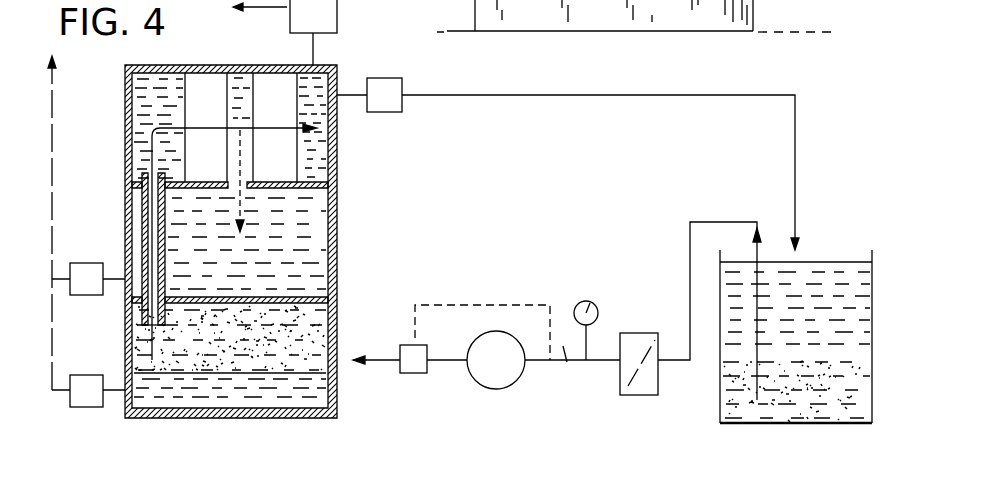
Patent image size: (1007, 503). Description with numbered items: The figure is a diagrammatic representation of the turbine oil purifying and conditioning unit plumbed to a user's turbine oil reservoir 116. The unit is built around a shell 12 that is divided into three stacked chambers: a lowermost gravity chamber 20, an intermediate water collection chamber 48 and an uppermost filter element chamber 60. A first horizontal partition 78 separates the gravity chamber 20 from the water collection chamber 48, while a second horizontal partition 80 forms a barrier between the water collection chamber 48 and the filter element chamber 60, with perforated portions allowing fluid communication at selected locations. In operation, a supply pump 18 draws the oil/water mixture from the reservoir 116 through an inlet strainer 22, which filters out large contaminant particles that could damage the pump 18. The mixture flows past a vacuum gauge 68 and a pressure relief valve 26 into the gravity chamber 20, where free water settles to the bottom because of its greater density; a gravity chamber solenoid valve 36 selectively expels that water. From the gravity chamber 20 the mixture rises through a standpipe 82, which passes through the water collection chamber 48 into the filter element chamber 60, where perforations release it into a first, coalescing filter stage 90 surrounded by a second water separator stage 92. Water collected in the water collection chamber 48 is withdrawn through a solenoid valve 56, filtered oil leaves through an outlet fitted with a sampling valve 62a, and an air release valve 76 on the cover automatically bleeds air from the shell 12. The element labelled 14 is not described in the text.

The shell 12 is at (340, 229).
The machine 14 is at (757, 1).
The supply pump 18 is at (514, 383).
The gravity chamber 20 is at (338, 320).
The inlet strainer 22 is at (633, 340).
The pressure relief valve 26 is at (400, 346).
The gravity chamber solenoid valve 36 is at (100, 374).
The water collection chamber 48 is at (314, 215).
The solenoid valve 56 is at (100, 262).
The filter element chamber 60 is at (331, 157).
The sampling valve 62a is at (403, 88).
The vacuum gauge 68 is at (591, 302).
The air release valve 76 is at (289, 14).
The first horizontal partition 78 is at (318, 297).
The second horizontal partition 80 is at (331, 186).
The standpipe 82 is at (165, 261).
The first filter stage 90 is at (218, 82).
The second filter stage 92 is at (287, 82).
The turbine oil reservoir 116 is at (833, 268).